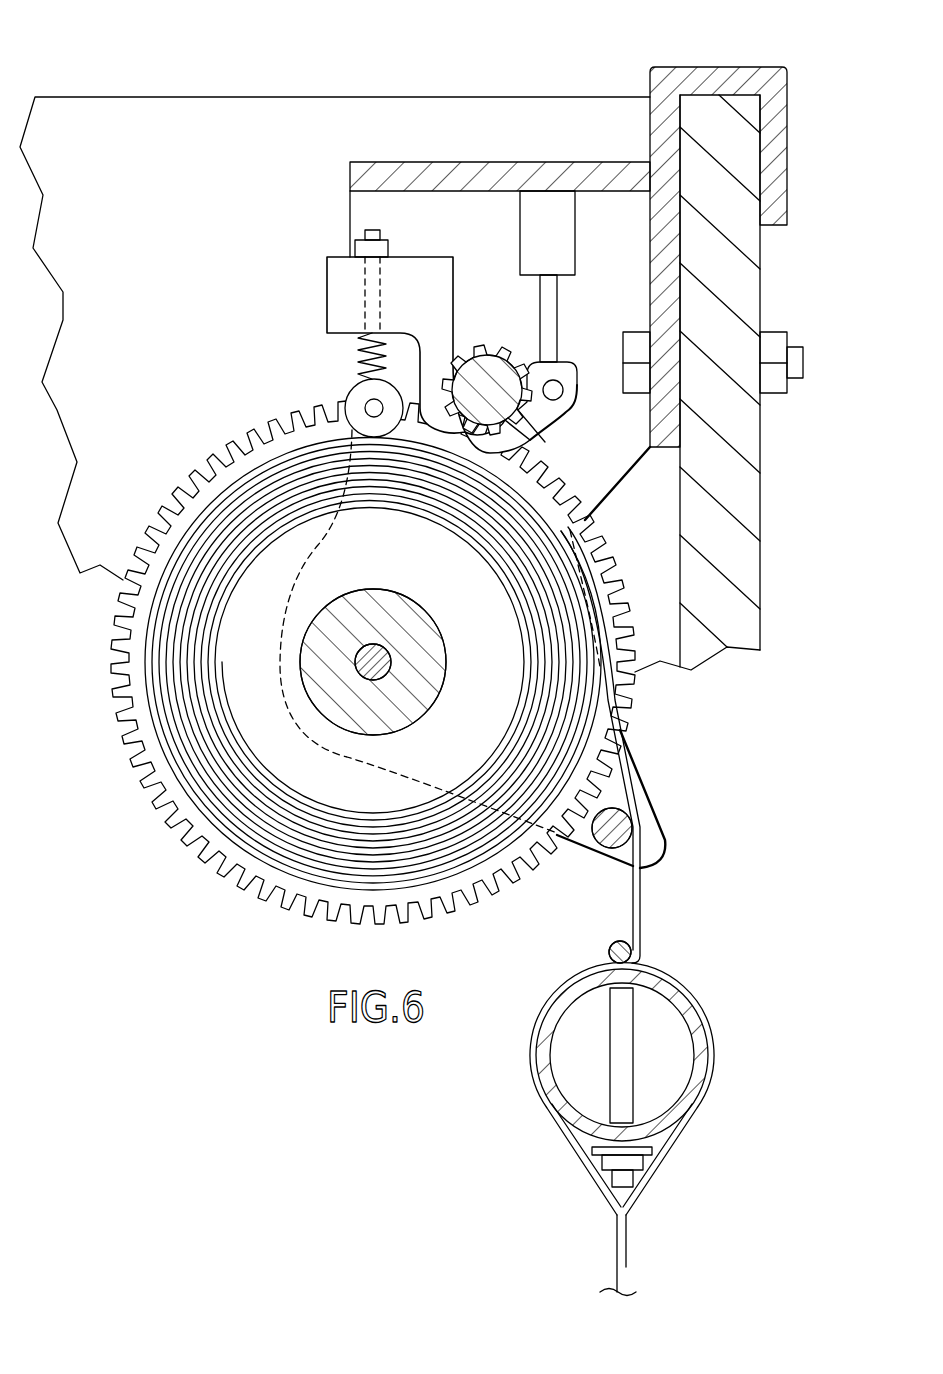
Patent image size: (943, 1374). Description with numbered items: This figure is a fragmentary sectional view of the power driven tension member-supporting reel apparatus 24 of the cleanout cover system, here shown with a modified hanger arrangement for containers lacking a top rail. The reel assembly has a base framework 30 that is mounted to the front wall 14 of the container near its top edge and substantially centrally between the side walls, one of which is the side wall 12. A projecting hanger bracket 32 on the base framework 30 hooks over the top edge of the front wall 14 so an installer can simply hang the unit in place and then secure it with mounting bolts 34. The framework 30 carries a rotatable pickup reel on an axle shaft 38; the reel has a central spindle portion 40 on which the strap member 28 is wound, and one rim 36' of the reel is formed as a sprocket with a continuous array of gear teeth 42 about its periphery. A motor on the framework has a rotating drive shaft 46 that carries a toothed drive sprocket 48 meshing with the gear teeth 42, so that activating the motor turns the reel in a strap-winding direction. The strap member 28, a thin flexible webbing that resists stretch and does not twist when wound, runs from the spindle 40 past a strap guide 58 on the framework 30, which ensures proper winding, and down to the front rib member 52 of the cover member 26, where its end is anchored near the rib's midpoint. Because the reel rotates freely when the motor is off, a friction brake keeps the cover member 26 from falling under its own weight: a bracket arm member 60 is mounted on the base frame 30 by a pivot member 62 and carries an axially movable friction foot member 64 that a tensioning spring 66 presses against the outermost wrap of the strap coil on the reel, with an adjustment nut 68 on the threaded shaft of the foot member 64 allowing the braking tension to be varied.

The side wall 12 is at (160, 268).
The front wall 14 is at (760, 285).
The power driven tension member-supporting reel apparatus 24 is at (228, 205).
The cover member 26 is at (615, 1253).
The strap member 28 is at (382, 807).
The base framework 30 is at (350, 213).
The hanger bracket 32 is at (787, 90).
The mounting bolts 34 is at (630, 330).
The rim 36' is at (361, 660).
The axle shaft 38 is at (392, 656).
The spindle portion 40 is at (375, 589).
The gear teeth 42 is at (118, 730).
The drive shaft 46 is at (545, 442).
The drive sprocket 48 is at (492, 345).
The front rib member 52 is at (565, 997).
The strap guide 58 is at (593, 850).
The bracket arm member 60 is at (327, 300).
The pivot member 62 is at (562, 398).
The friction foot member 64 is at (345, 402).
The tensioning spring 66 is at (355, 357).
The adjustment nut 68 is at (388, 243).